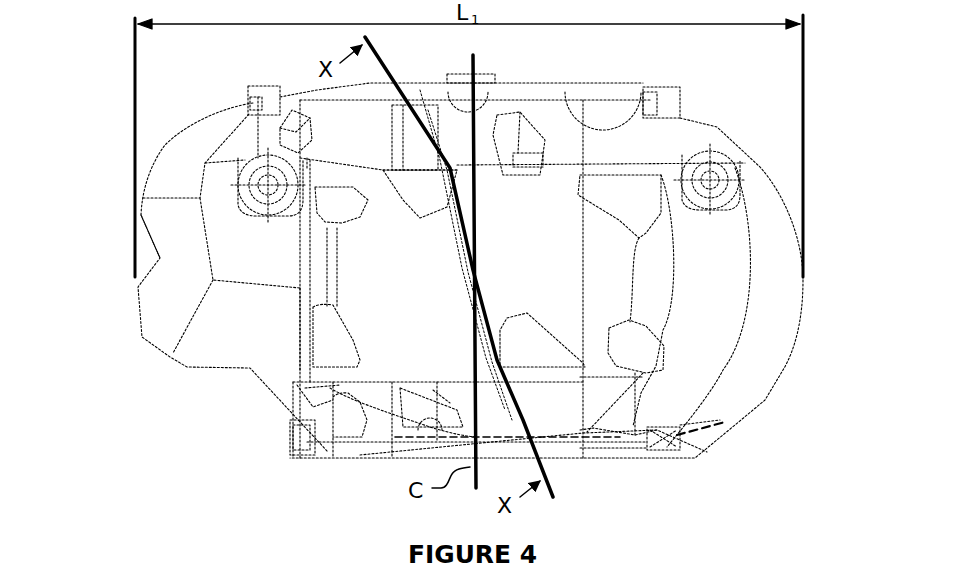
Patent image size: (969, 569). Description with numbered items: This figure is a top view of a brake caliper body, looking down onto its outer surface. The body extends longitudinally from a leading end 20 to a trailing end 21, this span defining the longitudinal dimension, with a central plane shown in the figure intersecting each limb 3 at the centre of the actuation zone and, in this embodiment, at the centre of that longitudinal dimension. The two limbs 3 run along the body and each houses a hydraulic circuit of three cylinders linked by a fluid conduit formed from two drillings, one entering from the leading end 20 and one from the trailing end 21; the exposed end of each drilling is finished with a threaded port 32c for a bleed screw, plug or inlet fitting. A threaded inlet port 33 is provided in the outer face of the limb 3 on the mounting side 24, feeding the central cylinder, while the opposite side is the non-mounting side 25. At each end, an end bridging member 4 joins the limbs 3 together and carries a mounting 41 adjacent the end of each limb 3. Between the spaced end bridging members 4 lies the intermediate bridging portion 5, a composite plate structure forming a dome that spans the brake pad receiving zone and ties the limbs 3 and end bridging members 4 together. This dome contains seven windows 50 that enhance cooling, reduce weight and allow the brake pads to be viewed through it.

The leading end 20 is at (100, 292).
The limb 3 is at (533, 80).
The end bridging member 4 is at (241, 329).
The intermediate bridging portion 5 is at (535, 266).
The mounting side 24 is at (591, 66).
The non-mounting side 25 is at (361, 485).
The trailing end 21 is at (824, 334).
The mounting 41 is at (268, 186).
The window 50 is at (357, 211).
The threaded inlet port 33 is at (673, 90).
The threaded port 32c is at (250, 100).